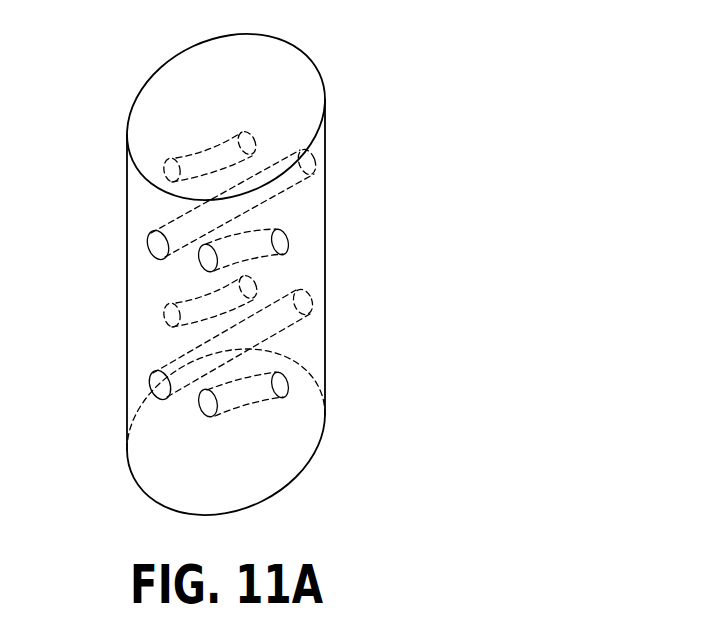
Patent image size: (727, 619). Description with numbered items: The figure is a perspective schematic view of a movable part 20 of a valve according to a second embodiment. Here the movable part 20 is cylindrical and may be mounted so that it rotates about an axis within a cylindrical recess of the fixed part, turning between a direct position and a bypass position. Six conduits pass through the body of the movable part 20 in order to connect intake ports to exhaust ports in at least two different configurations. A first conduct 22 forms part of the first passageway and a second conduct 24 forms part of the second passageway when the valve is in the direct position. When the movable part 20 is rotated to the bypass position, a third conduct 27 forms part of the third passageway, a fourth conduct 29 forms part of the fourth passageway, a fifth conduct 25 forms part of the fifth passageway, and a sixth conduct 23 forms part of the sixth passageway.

The movable part 20 is at (283, 72).
The first conduct 22 is at (187, 228).
The sixth conduct 23 is at (208, 163).
The second conduct 24 is at (178, 370).
The fifth conduct 25 is at (193, 317).
The third conduct 27 is at (243, 247).
The fourth conduct 29 is at (248, 387).